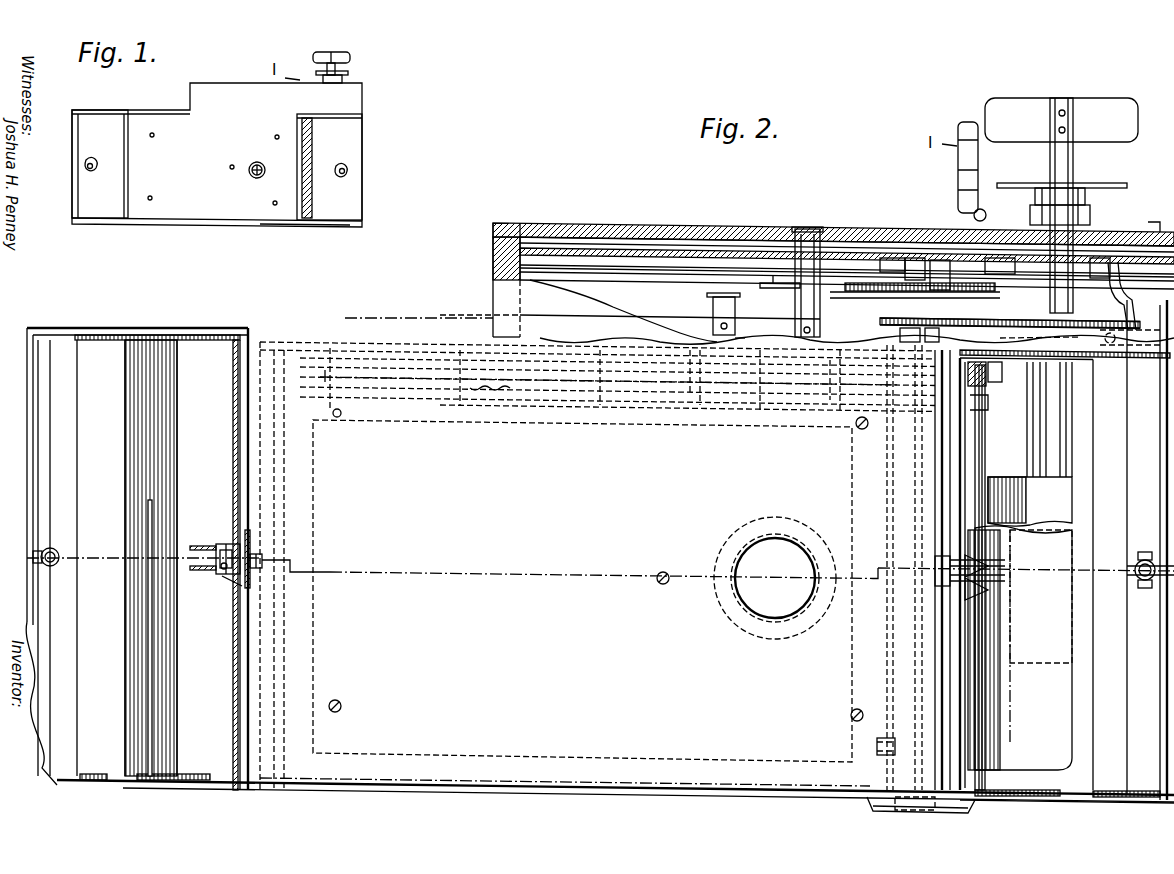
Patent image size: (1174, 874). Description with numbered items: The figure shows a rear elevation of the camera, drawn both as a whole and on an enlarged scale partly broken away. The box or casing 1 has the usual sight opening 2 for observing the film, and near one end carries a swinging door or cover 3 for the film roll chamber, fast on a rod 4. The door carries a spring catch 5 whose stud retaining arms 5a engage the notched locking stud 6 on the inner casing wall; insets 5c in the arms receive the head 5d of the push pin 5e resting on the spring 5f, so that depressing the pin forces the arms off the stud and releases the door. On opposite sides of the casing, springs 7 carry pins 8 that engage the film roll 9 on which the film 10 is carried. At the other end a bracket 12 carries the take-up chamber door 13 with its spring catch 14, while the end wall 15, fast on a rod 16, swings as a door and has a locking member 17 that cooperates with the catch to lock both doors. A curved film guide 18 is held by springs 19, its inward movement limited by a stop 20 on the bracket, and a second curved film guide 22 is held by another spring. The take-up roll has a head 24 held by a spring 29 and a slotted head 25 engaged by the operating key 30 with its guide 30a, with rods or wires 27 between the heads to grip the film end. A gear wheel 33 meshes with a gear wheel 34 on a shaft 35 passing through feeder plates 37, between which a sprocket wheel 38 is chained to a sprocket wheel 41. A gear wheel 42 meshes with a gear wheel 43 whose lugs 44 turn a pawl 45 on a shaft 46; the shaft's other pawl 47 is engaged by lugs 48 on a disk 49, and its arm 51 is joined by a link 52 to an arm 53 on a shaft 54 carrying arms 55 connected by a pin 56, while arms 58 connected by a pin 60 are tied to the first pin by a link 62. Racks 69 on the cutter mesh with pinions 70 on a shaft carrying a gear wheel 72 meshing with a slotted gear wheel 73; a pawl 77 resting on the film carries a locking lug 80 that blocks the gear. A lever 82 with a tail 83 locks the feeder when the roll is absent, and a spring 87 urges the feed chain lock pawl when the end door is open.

In FIG. 1, the box or casing 1 is at (362, 98).
In FIG. 2, the box or casing 1 is at (27, 355).
In FIG. 1, the sight opening 2 is at (250, 176).
In FIG. 2, the sight opening 2 is at (752, 578).
In FIG. 1, the swinging door or cover 3 is at (88, 120).
In FIG. 2, the swinging door or cover 3 is at (240, 492).
In FIG. 2, the rod 4 is at (248, 330).
In FIG. 1, the spring catch 5 is at (92, 160).
In FIG. 2, the spring catch 5 is at (250, 540).
In FIG. 2, the stud retaining arms 5a is at (226, 548).
In FIG. 2, the insets 5c is at (222, 568).
In FIG. 2, the head 5d is at (256, 572).
In FIG. 2, the push pin 5e is at (262, 556).
In FIG. 2, the spring 5f is at (224, 586).
In FIG. 2, the locking member or stud 6 is at (58, 548).
In FIG. 1, the springs 7 is at (125, 110).
In FIG. 2, the springs 7 is at (190, 330).
In FIG. 2, the pins 8 is at (150, 330).
In FIG. 2, the film roll 9 is at (177, 660).
In FIG. 2, the film 10 is at (520, 280).
In FIG. 2, the bracket 12 is at (233, 378).
In FIG. 1, the door or cover 13 is at (345, 130).
In FIG. 2, the door or cover 13 is at (1060, 313).
In FIG. 1, the spring catch 14 is at (348, 170).
In FIG. 2, the spring catch 14 is at (355, 316).
In FIG. 2, the end wall 15 is at (1168, 520).
In FIG. 2, the rod 16 is at (1160, 806).
In FIG. 2, the locking member 17 is at (1122, 602).
In FIG. 2, the curved film guide 18 is at (1060, 748).
In FIG. 2, the springs 19 is at (985, 420).
In FIG. 2, the stop 20 is at (1030, 490).
In FIG. 2, the curved film guide 22 is at (1075, 690).
In FIG. 2, the head 24 is at (1080, 790).
In FIG. 2, the head 25 is at (1065, 366).
In FIG. 2, the rods or wires 27 is at (1070, 438).
In FIG. 1, the spring 29 is at (305, 226).
In FIG. 2, the spring 29 is at (1012, 804).
In FIG. 1, the operating member or key 30 is at (350, 56).
In FIG. 2, the operating member or key 30 is at (1062, 100).
In FIG. 1, the guide 30a is at (348, 73).
In FIG. 2, the guide 30a is at (1082, 190).
In FIG. 2, the gear wheel 33 is at (918, 246).
In FIG. 2, the gear wheel 34 is at (740, 228).
In FIG. 2, the shaft 35 is at (812, 227).
In FIG. 2, the feeder plates 37 is at (472, 400).
In FIG. 2, the sprocket wheel 38 is at (766, 398).
In FIG. 2, the sprocket wheel 41 is at (324, 376).
In FIG. 2, the gear wheel 42 is at (1120, 246).
In FIG. 2, the gear wheel 43 is at (952, 246).
In FIG. 2, the lugs 44 is at (893, 246).
In FIG. 2, the pawl 45 is at (982, 210).
In FIG. 2, the shaft 46 is at (905, 345).
In FIG. 2, the pawl 47 is at (965, 338).
In FIG. 2, the lugs 48 is at (1125, 338).
In FIG. 2, the disk 49 is at (1124, 356).
In FIG. 2, the arm 51 is at (998, 246).
In FIG. 2, the link 52 is at (778, 287).
In FIG. 2, the arm 53 is at (707, 295).
In FIG. 2, the shaft 54 is at (718, 339).
In FIG. 2, the arms 55 is at (680, 398).
In FIG. 2, the pin 56 is at (623, 311).
In FIG. 2, the arms 58 is at (498, 395).
In FIG. 2, the pin 60 is at (480, 355).
In FIG. 2, the link 62 is at (586, 412).
In FIG. 2, the racks 69 is at (945, 822).
In FIG. 2, the pinions 70 is at (884, 345).
In FIG. 2, the gear wheel 72 is at (842, 398).
In FIG. 2, the gear wheel 73 is at (1092, 356).
In FIG. 2, the pawl 77 is at (876, 752).
In FIG. 2, the locking lug or projection 80 is at (911, 291).
In FIG. 2, the lever 82 is at (1136, 270).
In FIG. 2, the tail 83 is at (1034, 341).
In FIG. 2, the spring 87 is at (1150, 225).